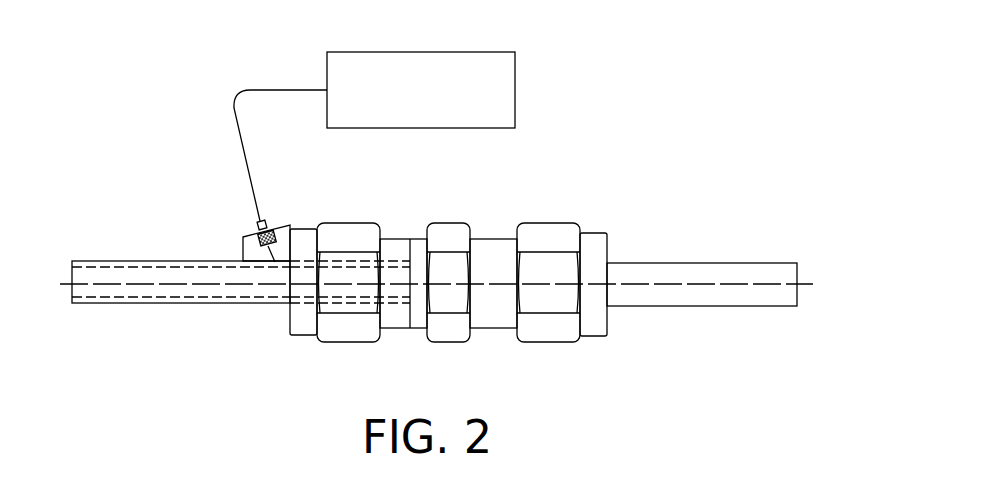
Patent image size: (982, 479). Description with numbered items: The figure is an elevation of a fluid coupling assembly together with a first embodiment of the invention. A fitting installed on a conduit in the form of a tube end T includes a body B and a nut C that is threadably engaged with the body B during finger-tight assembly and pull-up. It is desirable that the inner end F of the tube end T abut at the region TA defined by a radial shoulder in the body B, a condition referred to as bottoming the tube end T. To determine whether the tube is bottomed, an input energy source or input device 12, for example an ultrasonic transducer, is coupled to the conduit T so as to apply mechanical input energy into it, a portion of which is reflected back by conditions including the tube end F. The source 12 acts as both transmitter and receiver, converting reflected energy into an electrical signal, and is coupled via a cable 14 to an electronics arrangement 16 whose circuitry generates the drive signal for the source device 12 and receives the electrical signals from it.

The tube end T is at (121, 256).
The input device 12 is at (248, 223).
The cable 14 is at (236, 137).
The electronics arrangement 16 is at (520, 54).
The nut C is at (350, 219).
The inner end F is at (398, 236).
The body B is at (458, 219).
The abutment region TA is at (412, 336).